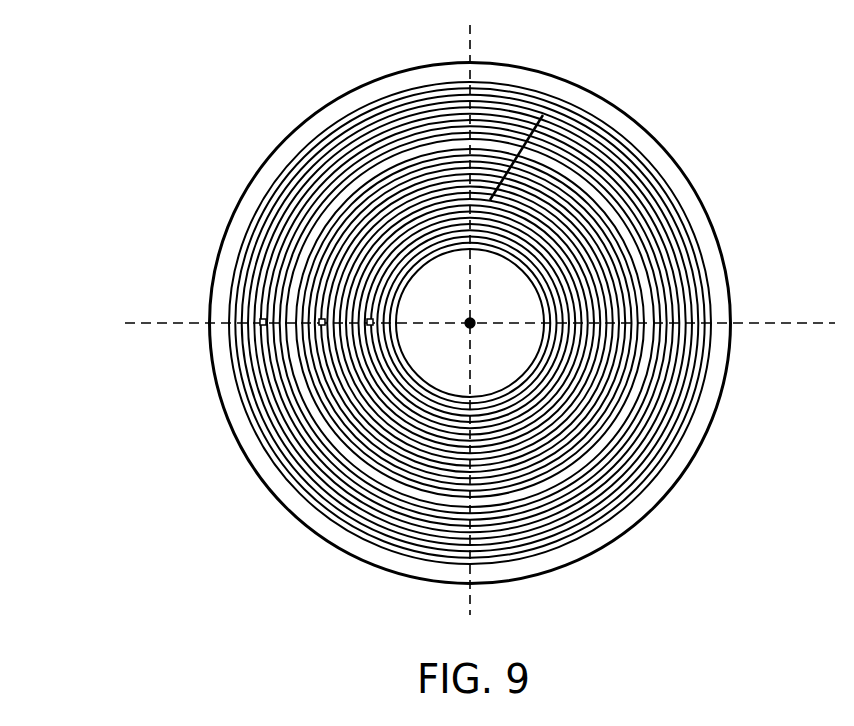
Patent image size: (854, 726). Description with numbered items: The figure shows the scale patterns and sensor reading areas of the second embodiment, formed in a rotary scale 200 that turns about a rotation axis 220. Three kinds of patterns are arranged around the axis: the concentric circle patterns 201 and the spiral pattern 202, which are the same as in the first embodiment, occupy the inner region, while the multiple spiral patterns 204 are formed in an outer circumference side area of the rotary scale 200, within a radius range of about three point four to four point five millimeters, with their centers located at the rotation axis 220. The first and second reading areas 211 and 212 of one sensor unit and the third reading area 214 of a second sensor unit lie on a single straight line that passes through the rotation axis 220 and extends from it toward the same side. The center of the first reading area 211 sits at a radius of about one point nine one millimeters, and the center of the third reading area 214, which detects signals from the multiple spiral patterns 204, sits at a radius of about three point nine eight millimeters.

The rotary scale 200 is at (716, 228).
The concentric circle patterns 201 is at (580, 197).
The spiral pattern 202 is at (637, 185).
The multiple spiral patterns 204 is at (665, 177).
The first reading area 211 is at (370, 318).
The second reading area 212 is at (322, 318).
The third reading area 214 is at (240, 322).
The rotation axis 220 is at (470, 322).